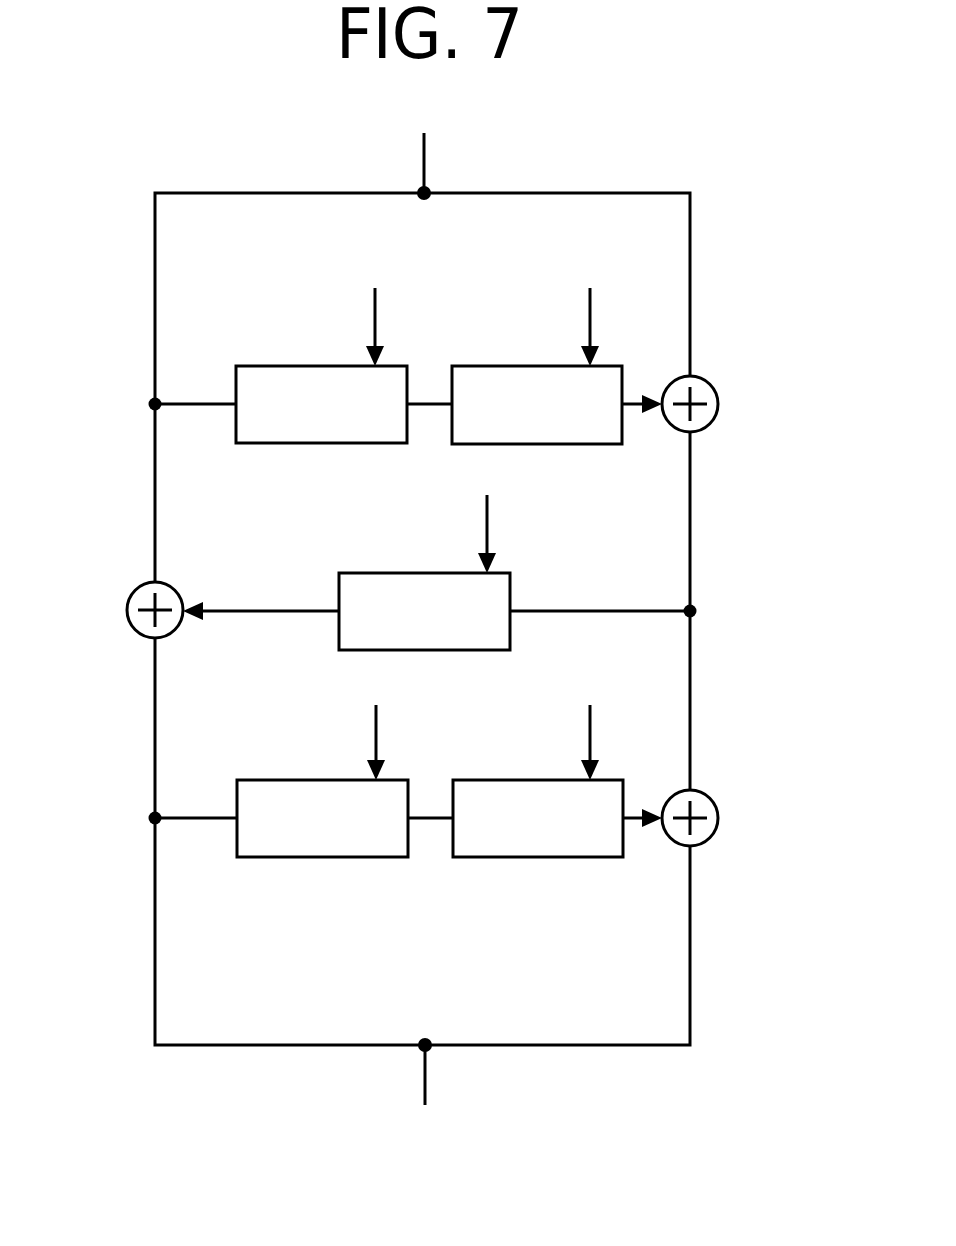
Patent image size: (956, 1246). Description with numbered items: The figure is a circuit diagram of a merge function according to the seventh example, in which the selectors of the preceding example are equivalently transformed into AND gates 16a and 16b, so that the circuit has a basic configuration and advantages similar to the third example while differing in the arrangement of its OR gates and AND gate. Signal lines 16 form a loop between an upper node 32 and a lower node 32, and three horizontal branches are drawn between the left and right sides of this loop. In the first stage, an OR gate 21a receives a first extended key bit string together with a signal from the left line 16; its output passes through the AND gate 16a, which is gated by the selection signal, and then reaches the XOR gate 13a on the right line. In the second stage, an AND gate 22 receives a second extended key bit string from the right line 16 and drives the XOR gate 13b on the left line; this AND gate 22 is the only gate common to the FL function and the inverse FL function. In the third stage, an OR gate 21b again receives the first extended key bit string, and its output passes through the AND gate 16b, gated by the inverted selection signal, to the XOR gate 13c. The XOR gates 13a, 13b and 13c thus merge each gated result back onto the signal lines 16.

The connection node 32 is at (431, 179).
The signal line 16 is at (165, 306).
The OR gate 21a is at (272, 366).
The AND gate 16a is at (507, 366).
The XOR gate 13a is at (711, 385).
The AND gate 22 is at (373, 573).
The XOR gate 13b is at (142, 583).
The OR gate 21b is at (272, 780).
The AND gate 16b is at (507, 780).
The XOR gate 13c is at (711, 800).